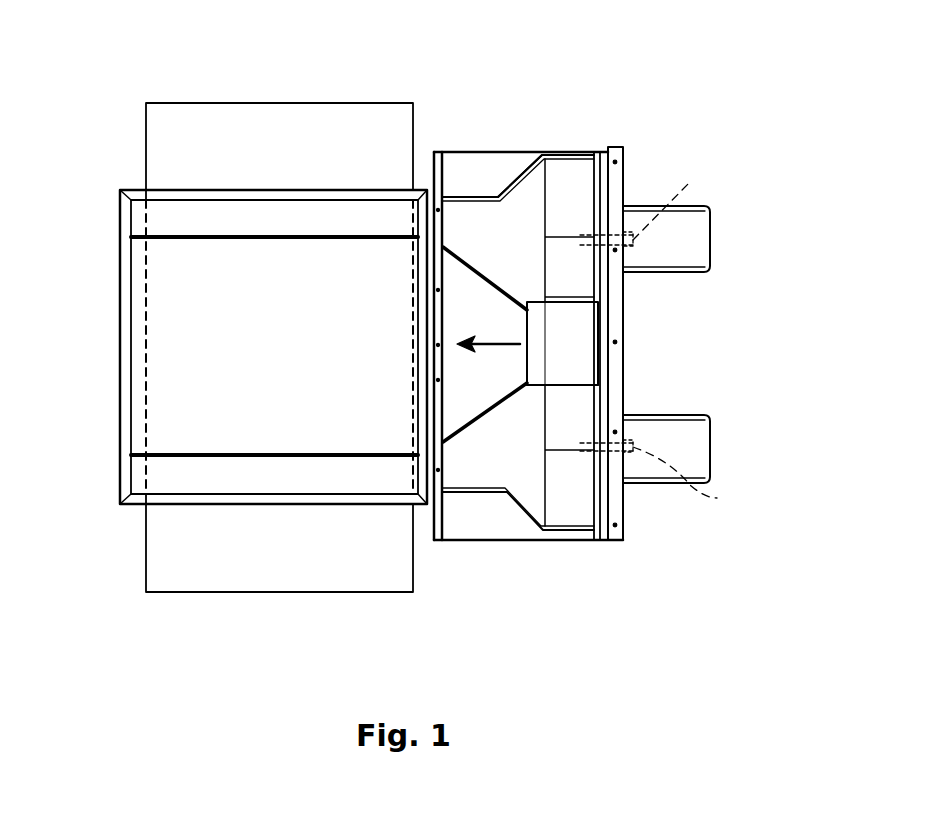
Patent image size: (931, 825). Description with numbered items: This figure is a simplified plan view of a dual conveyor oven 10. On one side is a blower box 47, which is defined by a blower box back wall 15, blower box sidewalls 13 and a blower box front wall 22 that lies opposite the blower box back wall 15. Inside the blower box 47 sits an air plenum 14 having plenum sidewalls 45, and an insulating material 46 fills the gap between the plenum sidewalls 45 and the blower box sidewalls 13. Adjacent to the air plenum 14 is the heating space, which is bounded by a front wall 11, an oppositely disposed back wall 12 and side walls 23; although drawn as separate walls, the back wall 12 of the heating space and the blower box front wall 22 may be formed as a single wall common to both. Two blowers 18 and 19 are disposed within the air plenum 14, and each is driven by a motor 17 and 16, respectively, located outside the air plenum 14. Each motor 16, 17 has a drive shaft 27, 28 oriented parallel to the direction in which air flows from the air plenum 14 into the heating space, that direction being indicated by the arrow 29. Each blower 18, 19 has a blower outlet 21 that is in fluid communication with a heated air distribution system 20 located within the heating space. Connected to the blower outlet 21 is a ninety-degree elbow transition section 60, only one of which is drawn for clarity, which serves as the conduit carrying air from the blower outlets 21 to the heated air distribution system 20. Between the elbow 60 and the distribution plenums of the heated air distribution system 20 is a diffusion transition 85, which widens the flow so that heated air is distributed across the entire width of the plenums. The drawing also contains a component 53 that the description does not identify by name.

The dual conveyor oven 10 is at (536, 92).
The front wall 11 is at (118, 247).
The back wall 12 is at (420, 212).
The blower box sidewalls 13 is at (480, 152).
The air plenum 14 is at (505, 457).
The blower box back wall 15 is at (623, 167).
The motor 16 is at (710, 230).
The motor 17 is at (710, 445).
The blower 18 is at (583, 485).
The blower 19 is at (580, 275).
The heated air distribution system 20 is at (262, 257).
The blower outlet 21 is at (600, 384).
The blower box front wall 22 is at (448, 168).
The side walls 23 is at (163, 185).
The drive shaft 27 is at (659, 201).
The drive shaft 28 is at (673, 477).
The arrow 29 is at (492, 350).
The plenum sidewalls 45 is at (487, 177).
The insulating material 46 is at (487, 168).
The blower box 47 is at (587, 547).
The plate 53 is at (328, 100).
The 90° elbow transition section 60 is at (587, 330).
The diffusion transition 85 is at (485, 273).